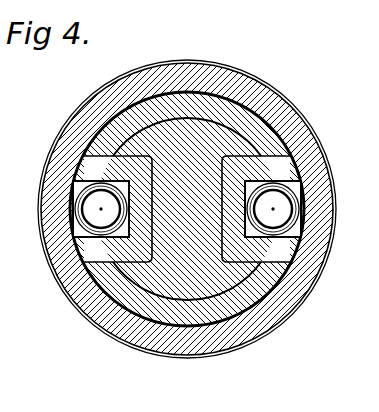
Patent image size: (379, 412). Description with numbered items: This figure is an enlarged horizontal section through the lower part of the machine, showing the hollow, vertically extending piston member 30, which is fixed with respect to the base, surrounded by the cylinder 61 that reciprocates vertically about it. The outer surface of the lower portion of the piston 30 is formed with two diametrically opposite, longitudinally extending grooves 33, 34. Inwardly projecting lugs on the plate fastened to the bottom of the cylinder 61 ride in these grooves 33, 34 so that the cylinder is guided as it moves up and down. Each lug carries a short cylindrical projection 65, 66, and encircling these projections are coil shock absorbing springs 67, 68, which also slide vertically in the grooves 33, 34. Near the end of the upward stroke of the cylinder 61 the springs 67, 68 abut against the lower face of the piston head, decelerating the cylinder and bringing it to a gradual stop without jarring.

The piston member 30 is at (234, 117).
The groove 33 is at (131, 237).
The groove 34 is at (245, 182).
The cylinder 61 is at (82, 118).
The cylindrical projection 65 is at (96, 206).
The cylindrical projection 66 is at (301, 214).
The coil shock absorbing spring 67 is at (77, 224).
The coil shock absorbing spring 68 is at (256, 225).